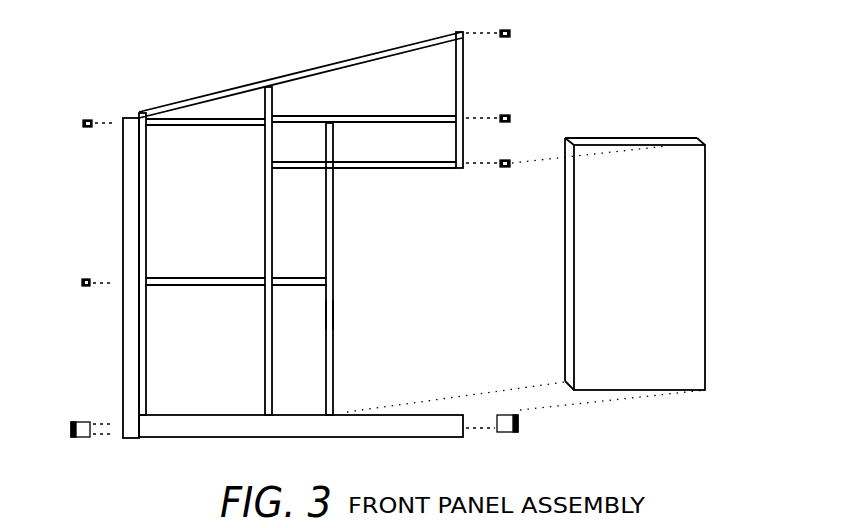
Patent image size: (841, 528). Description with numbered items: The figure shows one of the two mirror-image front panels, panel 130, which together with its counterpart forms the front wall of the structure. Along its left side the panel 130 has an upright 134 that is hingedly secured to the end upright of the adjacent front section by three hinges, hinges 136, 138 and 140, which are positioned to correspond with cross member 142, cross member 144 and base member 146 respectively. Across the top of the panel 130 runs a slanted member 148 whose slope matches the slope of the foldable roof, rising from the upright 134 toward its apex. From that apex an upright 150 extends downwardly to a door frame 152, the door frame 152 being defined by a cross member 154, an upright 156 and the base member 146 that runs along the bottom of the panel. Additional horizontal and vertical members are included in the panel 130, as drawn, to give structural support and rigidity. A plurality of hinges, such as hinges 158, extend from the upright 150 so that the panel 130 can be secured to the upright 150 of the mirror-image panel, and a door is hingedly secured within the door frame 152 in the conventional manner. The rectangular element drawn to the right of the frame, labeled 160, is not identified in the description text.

The panel 130 is at (430, 474).
The upright 134 is at (123, 212).
The hinge 136 is at (88, 119).
The hinge 138 is at (86, 279).
The hinge 140 is at (80, 422).
The cross member 142 is at (198, 126).
The cross member 144 is at (207, 278).
The base member 146 is at (210, 414).
The slanted member 148 is at (339, 64).
The upright 150 is at (463, 72).
The door frame 152 is at (336, 244).
The cross member 154 is at (388, 169).
The upright 156 is at (334, 313).
The hinges 158 is at (512, 33).
The panel 160 is at (672, 137).